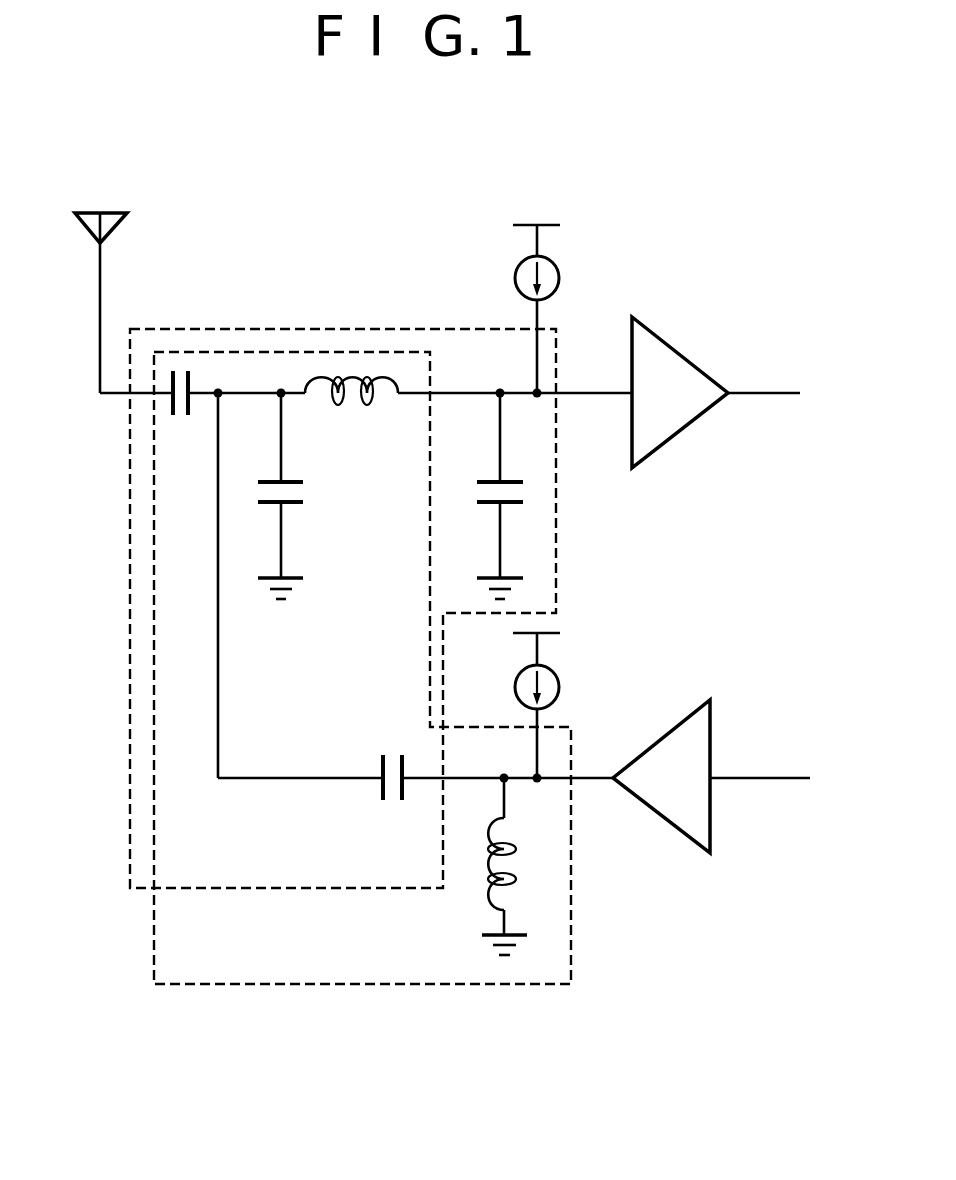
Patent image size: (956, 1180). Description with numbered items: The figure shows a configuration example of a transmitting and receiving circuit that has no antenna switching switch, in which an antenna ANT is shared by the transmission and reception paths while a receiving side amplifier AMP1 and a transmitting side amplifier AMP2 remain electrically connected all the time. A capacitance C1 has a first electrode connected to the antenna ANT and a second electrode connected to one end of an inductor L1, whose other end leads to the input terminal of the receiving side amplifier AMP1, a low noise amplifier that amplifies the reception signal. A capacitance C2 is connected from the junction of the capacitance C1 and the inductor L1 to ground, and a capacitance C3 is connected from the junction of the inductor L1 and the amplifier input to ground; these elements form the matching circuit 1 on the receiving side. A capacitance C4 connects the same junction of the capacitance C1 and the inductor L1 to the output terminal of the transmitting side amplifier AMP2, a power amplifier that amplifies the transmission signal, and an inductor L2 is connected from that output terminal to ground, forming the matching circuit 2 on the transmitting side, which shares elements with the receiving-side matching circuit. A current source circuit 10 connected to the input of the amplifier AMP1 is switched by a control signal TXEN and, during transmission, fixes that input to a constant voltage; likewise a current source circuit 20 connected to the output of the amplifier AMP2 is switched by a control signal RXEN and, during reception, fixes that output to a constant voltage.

The antenna ANT is at (130, 214).
The matching circuit on the receiving side 1 is at (350, 329).
The matching circuit on the transmitting side 2 is at (313, 985).
The capacitance C1 is at (181, 424).
The capacitance C2 is at (312, 491).
The capacitance C3 is at (532, 490).
The capacitance C4 is at (391, 806).
The inductor L1 is at (350, 412).
The inductor L2 is at (540, 868).
The current source circuit 10 is at (504, 275).
The current source circuit 20 is at (504, 685).
The control signal TXEN is at (570, 280).
The control signal RXEN is at (570, 687).
The receiving side amplifier AMP1 is at (678, 433).
The transmitting side amplifier AMP2 is at (712, 826).